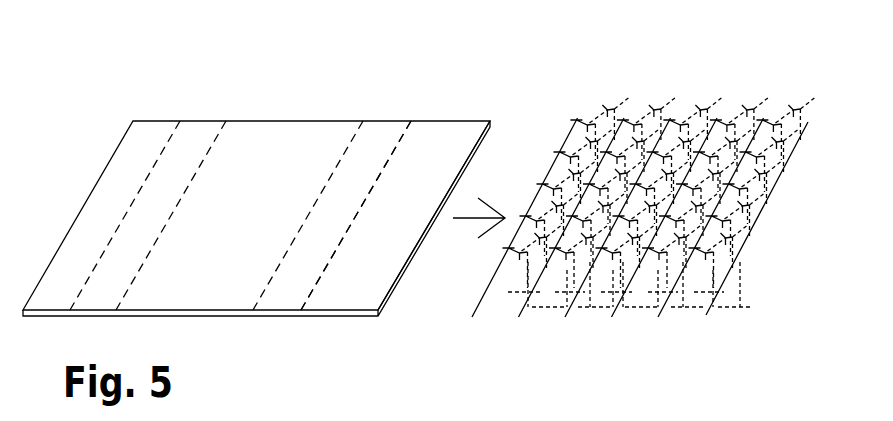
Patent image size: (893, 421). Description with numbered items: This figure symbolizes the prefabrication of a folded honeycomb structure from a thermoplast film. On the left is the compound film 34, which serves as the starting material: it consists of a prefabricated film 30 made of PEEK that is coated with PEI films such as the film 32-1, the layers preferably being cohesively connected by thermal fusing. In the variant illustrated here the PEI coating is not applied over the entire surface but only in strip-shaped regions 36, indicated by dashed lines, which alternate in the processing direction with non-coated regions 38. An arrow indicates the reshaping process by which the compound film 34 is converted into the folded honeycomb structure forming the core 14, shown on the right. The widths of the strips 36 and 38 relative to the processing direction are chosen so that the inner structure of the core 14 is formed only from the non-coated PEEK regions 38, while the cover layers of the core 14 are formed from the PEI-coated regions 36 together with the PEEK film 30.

The core 14 is at (707, 90).
The film 30 is at (322, 316).
The film 32-1 is at (373, 285).
The compound film 34 is at (340, 73).
The strip-shaped regions 36 is at (197, 133).
The non-coated regions 38 is at (147, 133).